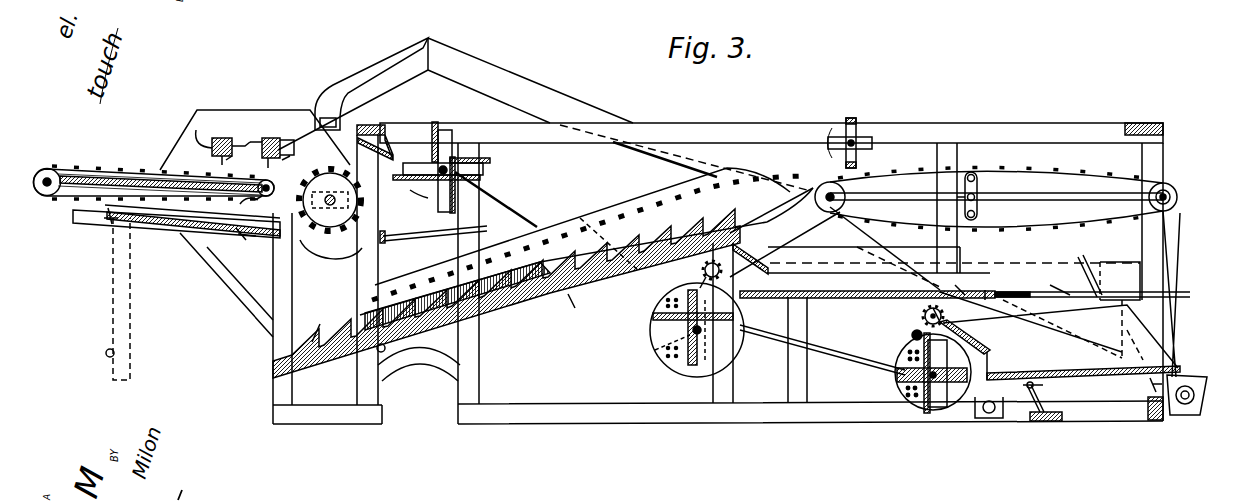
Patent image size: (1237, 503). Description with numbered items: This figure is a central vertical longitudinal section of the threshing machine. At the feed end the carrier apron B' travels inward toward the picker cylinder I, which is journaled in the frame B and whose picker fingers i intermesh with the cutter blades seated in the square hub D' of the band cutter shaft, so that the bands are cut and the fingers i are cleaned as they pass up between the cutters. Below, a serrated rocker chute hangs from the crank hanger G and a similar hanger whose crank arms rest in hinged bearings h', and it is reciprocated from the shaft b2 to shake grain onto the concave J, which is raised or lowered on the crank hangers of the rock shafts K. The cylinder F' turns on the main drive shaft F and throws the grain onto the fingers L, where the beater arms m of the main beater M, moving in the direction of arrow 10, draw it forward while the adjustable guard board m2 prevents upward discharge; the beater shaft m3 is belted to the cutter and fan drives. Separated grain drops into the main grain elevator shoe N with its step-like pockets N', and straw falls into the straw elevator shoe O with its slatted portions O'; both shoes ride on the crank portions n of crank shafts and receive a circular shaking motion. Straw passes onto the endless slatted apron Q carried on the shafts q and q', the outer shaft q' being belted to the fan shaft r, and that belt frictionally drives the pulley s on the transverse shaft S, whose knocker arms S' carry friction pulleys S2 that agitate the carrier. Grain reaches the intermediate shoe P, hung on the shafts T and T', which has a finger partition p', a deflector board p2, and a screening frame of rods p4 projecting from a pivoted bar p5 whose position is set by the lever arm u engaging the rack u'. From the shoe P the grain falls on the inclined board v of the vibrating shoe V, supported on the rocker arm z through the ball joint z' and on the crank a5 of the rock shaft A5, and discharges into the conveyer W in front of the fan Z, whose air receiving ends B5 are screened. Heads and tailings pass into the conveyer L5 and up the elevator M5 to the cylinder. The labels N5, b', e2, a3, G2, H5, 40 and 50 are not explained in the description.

The inclined hopper beam N5 is at (617, 114).
The carrier apron B' is at (154, 173).
The belt pulley b' is at (51, 175).
The belt support bar e2 is at (160, 173).
The shaft b2 is at (251, 207).
The frame B is at (253, 140).
The picker cylinder I is at (224, 138).
The picker fingers i is at (211, 140).
The arm a3 is at (247, 132).
The square enlargement or hub D' is at (280, 130).
The main drive shaft F is at (330, 200).
The cylinder F' is at (330, 193).
The concave J is at (330, 262).
The rock shafts K is at (165, 236).
The hinged bearings h' is at (193, 257).
The crank hanger G is at (110, 228).
The bracket G2 is at (246, 249).
The main beater M is at (448, 148).
The adjustable guard board m2 is at (398, 131).
The beater shaft m3 is at (475, 149).
The beater arms m is at (452, 205).
The arrow 10 is at (412, 191).
The fingers L is at (408, 240).
The straw elevator shoe O is at (586, 249).
The slatted step-like portions O' is at (604, 233).
The main grain elevator shoe N is at (506, 293).
The transverse angular step-like pockets N' is at (449, 318).
The crank portions n is at (700, 268).
The fan shaft r is at (695, 366).
The shaft q is at (840, 199).
The endless slatted apron Q is at (1030, 177).
The outer shaft q' is at (1148, 280).
The transverse shaft S is at (990, 196).
The knocker arms S' is at (986, 184).
The friction pulleys S2 is at (984, 199).
The pulley s is at (953, 204).
The bracket H5 is at (861, 132).
The deflector board p2 is at (936, 249).
The shaft T is at (965, 312).
The intermediate vibrating shoe P is at (870, 294).
The finger partition p' is at (822, 348).
The pin 50 is at (963, 286).
The transverse bar p5 is at (1012, 282).
The arms or rods p4 is at (1060, 282).
The rack u' is at (1103, 264).
The lever arm u is at (1119, 306).
The elevator M5 is at (1041, 330).
The vibrating shoe V is at (1061, 342).
The inclined chute or board v is at (968, 340).
The shaft T' is at (912, 320).
The pin 40 is at (912, 336).
The air receiving ends B5 is at (914, 372).
The fan Z is at (920, 388).
The conveyer W is at (982, 420).
The rocker arm z is at (1039, 397).
The ball joint connection z' is at (1032, 426).
The rock shaft A5 is at (1134, 403).
The crank a5 is at (1156, 368).
The conveyer L5 is at (1187, 404).